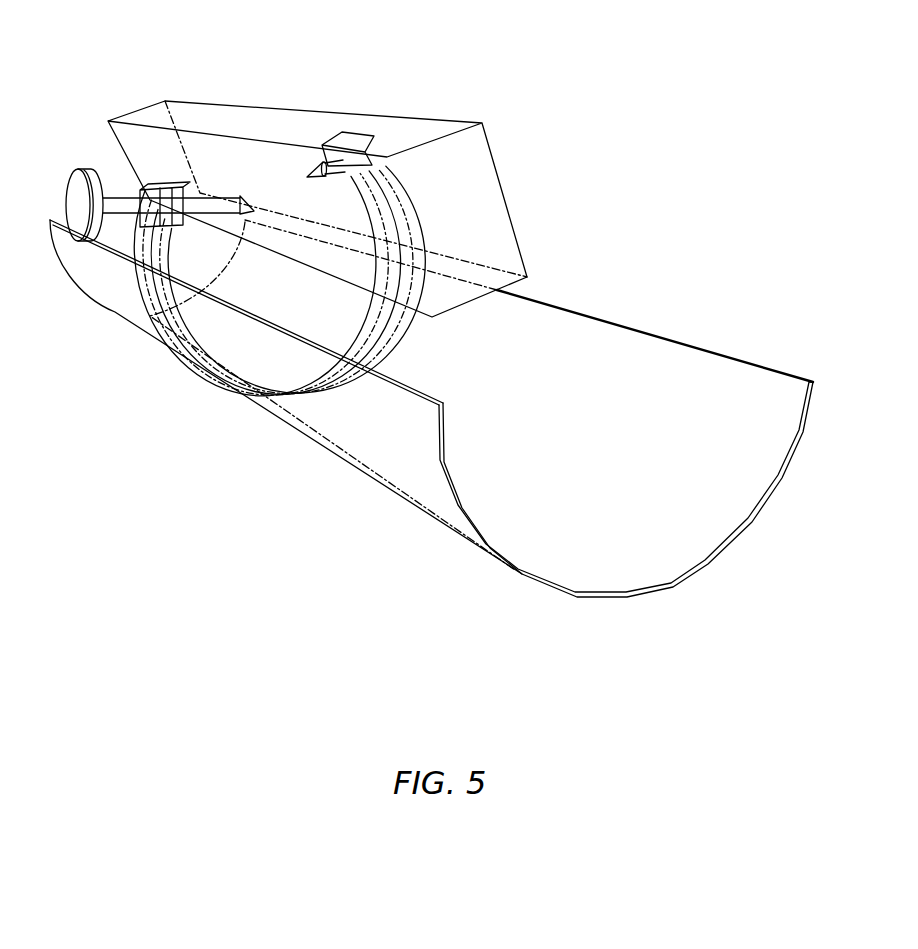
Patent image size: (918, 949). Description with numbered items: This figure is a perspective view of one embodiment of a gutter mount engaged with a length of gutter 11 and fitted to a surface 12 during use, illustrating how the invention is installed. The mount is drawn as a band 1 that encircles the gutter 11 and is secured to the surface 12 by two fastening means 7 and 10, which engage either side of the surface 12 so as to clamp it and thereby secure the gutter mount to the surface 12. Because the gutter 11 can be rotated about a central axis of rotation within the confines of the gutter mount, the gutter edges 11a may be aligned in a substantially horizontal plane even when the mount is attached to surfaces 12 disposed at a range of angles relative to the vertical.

The clamping band 1 is at (167, 348).
The fastening means 7 is at (115, 179).
The fastening means 10 is at (312, 151).
The gutter 11 is at (635, 520).
The gutter edges 11a is at (405, 388).
The surface 12 is at (198, 120).